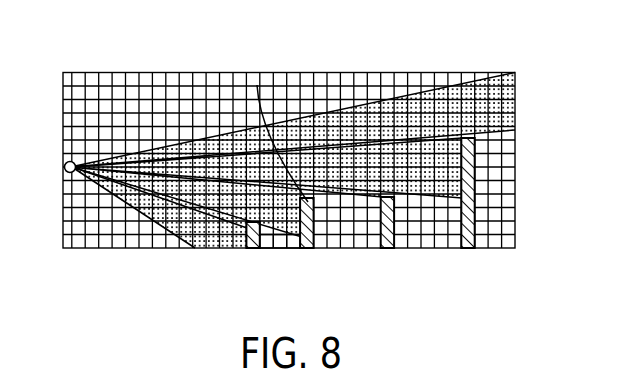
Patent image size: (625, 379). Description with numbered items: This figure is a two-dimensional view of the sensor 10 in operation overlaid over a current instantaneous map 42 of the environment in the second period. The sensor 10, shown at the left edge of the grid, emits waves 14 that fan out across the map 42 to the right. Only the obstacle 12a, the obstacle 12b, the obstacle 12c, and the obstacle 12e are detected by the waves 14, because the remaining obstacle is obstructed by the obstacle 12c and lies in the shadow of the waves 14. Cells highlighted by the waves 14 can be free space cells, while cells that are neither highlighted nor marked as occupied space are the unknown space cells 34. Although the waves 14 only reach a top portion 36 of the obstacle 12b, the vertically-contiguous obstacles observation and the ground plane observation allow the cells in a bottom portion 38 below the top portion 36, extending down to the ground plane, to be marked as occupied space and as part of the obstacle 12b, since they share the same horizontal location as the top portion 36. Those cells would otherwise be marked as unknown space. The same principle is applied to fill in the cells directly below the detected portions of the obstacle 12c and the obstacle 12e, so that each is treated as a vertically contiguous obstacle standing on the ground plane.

The sensor 10 is at (64, 170).
The waves 14 is at (505, 102).
The current instantaneous map 42 is at (118, 78).
The top portion 36 is at (257, 85).
The bottom portion 38 is at (307, 239).
The unknown space cells 34 is at (280, 243).
The obstacle 12a is at (253, 244).
The obstacle 12b is at (307, 247).
The obstacle 12c is at (385, 243).
The obstacle 12e is at (467, 245).